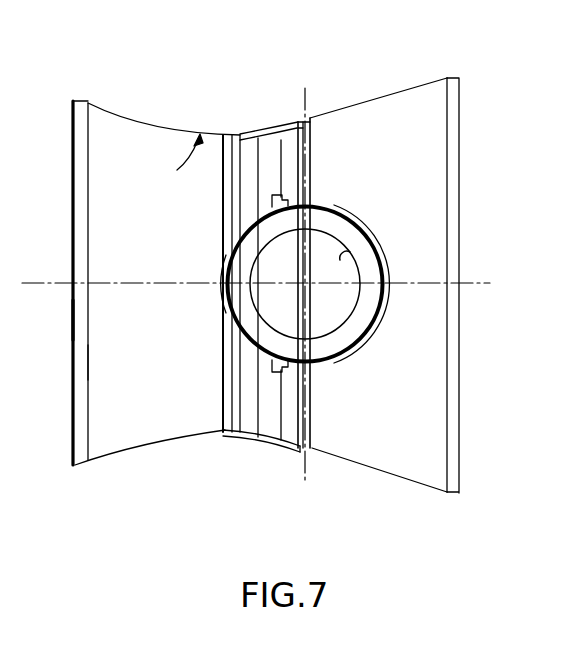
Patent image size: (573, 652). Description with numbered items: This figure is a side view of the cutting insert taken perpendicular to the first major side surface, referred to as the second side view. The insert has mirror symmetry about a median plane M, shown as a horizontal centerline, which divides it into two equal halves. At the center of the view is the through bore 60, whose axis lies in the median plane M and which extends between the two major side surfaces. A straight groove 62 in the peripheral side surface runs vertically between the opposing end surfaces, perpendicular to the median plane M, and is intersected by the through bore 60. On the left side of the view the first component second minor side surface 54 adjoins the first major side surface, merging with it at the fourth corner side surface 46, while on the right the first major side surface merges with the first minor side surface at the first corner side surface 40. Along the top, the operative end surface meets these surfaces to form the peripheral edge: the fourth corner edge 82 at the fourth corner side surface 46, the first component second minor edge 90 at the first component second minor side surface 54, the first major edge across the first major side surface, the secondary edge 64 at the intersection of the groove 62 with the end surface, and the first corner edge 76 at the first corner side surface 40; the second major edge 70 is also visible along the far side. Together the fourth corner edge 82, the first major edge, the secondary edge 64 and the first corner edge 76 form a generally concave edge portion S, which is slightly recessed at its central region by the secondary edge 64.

The first corner side surface 40 is at (455, 377).
The fourth corner side surface 46 is at (79, 362).
The first component second minor side surface 54 is at (71, 318).
The through bore 60 is at (358, 267).
The groove 62 is at (267, 410).
The secondary edge 64 is at (258, 133).
The second major edge 70 is at (267, 127).
The first corner edge 76 is at (452, 77).
The fourth corner edge 82 is at (80, 102).
The first component second minor edge 90 is at (73, 102).
The median plane M is at (40, 285).
The generally concave edge portion S is at (178, 161).